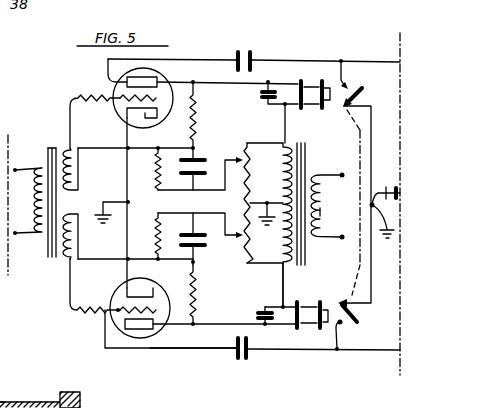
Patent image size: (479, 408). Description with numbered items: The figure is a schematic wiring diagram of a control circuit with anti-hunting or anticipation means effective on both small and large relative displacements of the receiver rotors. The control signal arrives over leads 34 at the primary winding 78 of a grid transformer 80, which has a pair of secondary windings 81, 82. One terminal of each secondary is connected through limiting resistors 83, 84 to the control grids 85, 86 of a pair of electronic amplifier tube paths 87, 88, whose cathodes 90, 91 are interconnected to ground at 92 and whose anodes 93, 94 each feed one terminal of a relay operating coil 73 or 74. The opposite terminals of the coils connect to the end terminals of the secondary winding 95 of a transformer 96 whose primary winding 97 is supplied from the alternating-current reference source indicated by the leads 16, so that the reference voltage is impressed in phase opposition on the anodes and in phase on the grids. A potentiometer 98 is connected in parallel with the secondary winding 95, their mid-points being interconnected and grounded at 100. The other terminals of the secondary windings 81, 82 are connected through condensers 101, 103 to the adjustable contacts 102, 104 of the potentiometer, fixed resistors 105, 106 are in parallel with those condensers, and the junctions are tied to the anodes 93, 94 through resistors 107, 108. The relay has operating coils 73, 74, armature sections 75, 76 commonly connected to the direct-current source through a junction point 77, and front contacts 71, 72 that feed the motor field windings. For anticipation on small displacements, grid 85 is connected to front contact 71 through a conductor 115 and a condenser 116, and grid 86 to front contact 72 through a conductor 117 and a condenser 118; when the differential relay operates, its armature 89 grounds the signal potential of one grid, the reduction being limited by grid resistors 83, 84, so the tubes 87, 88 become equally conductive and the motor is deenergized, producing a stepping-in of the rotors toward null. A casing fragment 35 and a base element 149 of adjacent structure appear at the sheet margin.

The leads 16 is at (320, 211).
The leads 34 is at (27, 201).
The casing 35 is at (9, 382).
The front contact 71 is at (348, 80).
The front contact 72 is at (343, 325).
The relay operating coil 73 is at (310, 106).
The relay operating coil 74 is at (308, 329).
The relay armature section 75 is at (364, 92).
The relay armature section 76 is at (359, 320).
The junction point 77 is at (385, 201).
The primary winding 78 is at (47, 170).
The grid transformer 80 is at (40, 281).
The secondary winding 81 is at (73, 181).
The secondary winding 82 is at (73, 244).
The limiting resistor 83 is at (77, 96).
The limiting resistor 84 is at (76, 313).
The control grid 85 is at (165, 92).
The control grid 86 is at (117, 312).
The electronic amplifier tube path 87 is at (158, 122).
The electronic amplifier tube path 88 is at (168, 283).
The armature 89 is at (359, 262).
The cathode 90 is at (127, 114).
The cathode 91 is at (125, 292).
The ground 92 is at (109, 205).
The anode 93 is at (108, 75).
The anode 94 is at (143, 331).
The secondary winding 95 is at (282, 184).
The transformer 96 is at (323, 291).
The primary winding 97 is at (327, 166).
The potentiometer 98 is at (251, 165).
The ground 100 is at (267, 232).
The condenser 101 is at (200, 161).
The adjustable contact 102 is at (226, 172).
The condenser 103 is at (196, 250).
The adjustable contact 104 is at (238, 240).
The fixed resistor 105 is at (157, 170).
The fixed resistor 106 is at (157, 236).
The resistor 107 is at (205, 110).
The resistor 108 is at (197, 312).
The conductor 115 is at (236, 55).
The condenser 116 is at (253, 56).
The conductor 117 is at (186, 350).
The condenser 118 is at (251, 365).
The base plate 149 is at (2, 401).